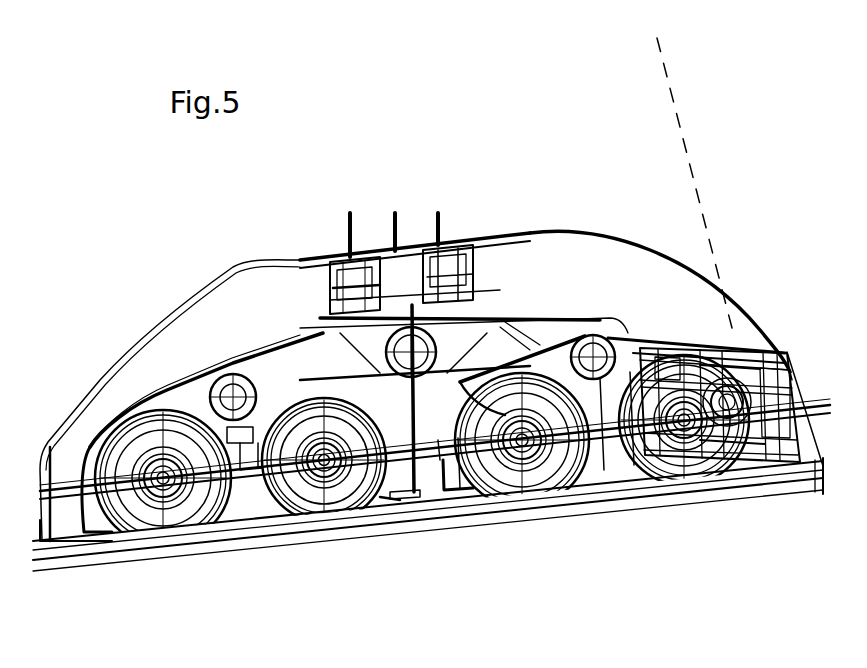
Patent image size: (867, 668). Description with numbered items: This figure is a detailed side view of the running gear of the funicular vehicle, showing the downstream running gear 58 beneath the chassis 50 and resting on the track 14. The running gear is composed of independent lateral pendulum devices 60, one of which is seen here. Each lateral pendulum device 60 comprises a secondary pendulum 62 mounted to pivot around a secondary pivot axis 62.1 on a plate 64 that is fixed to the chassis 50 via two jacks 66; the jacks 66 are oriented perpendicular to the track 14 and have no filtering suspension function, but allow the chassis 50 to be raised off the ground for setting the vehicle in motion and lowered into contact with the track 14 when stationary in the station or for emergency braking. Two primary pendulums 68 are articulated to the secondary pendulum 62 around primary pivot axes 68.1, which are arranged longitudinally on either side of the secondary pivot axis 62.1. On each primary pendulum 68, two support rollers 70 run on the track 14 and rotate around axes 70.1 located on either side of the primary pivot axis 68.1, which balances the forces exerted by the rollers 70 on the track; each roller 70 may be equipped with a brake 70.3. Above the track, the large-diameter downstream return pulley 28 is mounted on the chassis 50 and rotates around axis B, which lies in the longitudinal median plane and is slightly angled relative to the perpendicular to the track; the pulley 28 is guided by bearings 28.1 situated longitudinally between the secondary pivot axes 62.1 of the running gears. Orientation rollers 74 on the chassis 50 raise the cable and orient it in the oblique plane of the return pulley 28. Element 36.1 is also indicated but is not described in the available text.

The track 14 is at (73, 550).
The downstream return pulley 28 is at (615, 457).
The bearings of the downstream return pulley 28.1 is at (787, 348).
The housing wall 36.1 is at (67, 497).
The chassis 50 is at (181, 323).
The downstream running gear 58 is at (708, 160).
The lateral pendulum device 60 is at (165, 343).
The secondary pendulum 62 is at (560, 315).
The secondary pivot axis 62.1 is at (417, 492).
The plate 64 is at (495, 252).
The jack 66 is at (358, 260).
The primary pendulum 68 is at (112, 415).
The primary pivot axis 68.1 is at (233, 430).
The support roller 70 is at (165, 520).
The roller rotation axis 70.1 is at (185, 505).
The brake 70.3 is at (118, 530).
The orientation roller 74 is at (657, 333).
The axis B is at (667, 72).